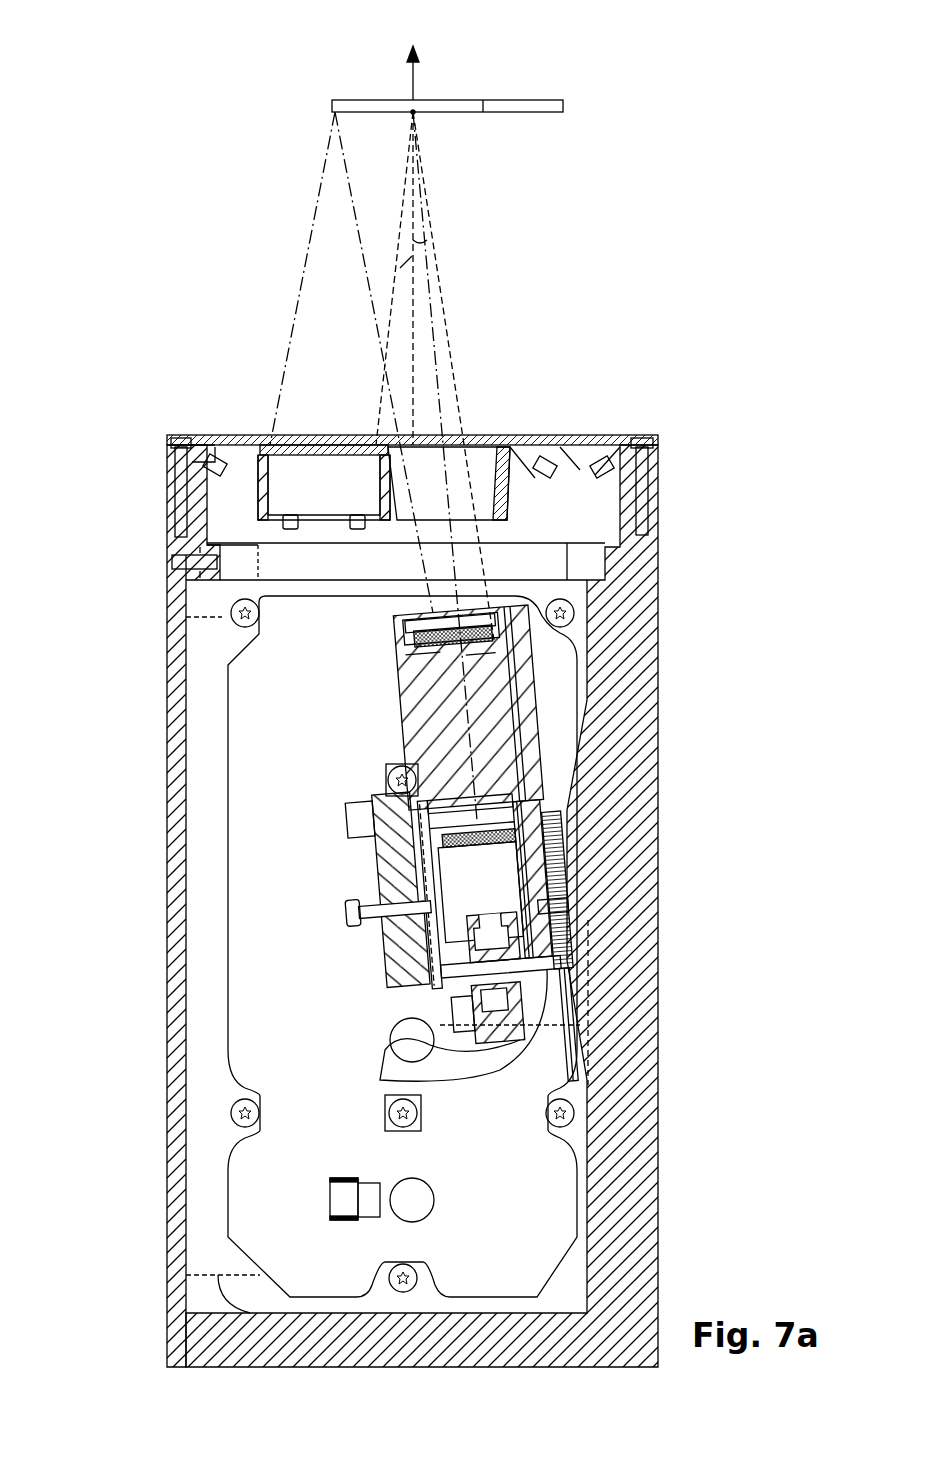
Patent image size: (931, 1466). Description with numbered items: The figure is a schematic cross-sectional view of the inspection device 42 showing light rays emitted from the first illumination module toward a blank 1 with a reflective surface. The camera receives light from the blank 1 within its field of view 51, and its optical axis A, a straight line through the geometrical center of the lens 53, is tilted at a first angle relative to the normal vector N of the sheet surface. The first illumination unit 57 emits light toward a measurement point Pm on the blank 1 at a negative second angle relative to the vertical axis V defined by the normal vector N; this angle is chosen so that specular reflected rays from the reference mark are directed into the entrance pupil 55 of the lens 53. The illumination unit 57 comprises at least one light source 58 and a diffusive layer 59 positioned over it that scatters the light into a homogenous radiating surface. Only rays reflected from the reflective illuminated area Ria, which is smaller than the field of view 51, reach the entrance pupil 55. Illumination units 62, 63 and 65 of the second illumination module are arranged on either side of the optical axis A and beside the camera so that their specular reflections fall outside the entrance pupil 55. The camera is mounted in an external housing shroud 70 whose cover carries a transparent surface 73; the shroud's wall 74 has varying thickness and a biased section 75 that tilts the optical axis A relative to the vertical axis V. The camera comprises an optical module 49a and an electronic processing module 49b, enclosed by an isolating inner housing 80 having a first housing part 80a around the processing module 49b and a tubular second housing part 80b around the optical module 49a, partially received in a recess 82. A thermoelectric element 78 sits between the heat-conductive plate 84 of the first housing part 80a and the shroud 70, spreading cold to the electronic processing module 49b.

The blank 1 is at (303, 96).
The inspection device 42 is at (656, 278).
The field of view 51 is at (484, 58).
The reflective illuminated area Ria is at (355, 100).
The normal vector N is at (427, 245).
The measurement point Pm is at (413, 112).
The vertical axis V is at (412, 287).
The transparent surface 73 is at (232, 437).
The illumination unit 57 is at (303, 437).
The diffusive layer 59 is at (340, 452).
The illumination unit 62 is at (172, 451).
The light source 58 is at (217, 468).
The second illumination unit 63 is at (627, 462).
The third illumination unit 65 is at (535, 462).
The optical axis A is at (455, 568).
The lens 53 is at (500, 622).
The external housing shroud 70 is at (185, 655).
The optical module 49a is at (548, 690).
The second housing part 80b is at (415, 690).
The biased section 75 is at (628, 718).
The entrance pupil 55 is at (482, 730).
The recess 82 is at (385, 795).
The heat-conductive plate 84 is at (540, 835).
The electronic processing module 49b is at (335, 858).
The first housing part 80a is at (385, 888).
The thermoelectric element 78 is at (578, 893).
The inner housing 80 is at (330, 912).
The wall 74 is at (630, 1030).